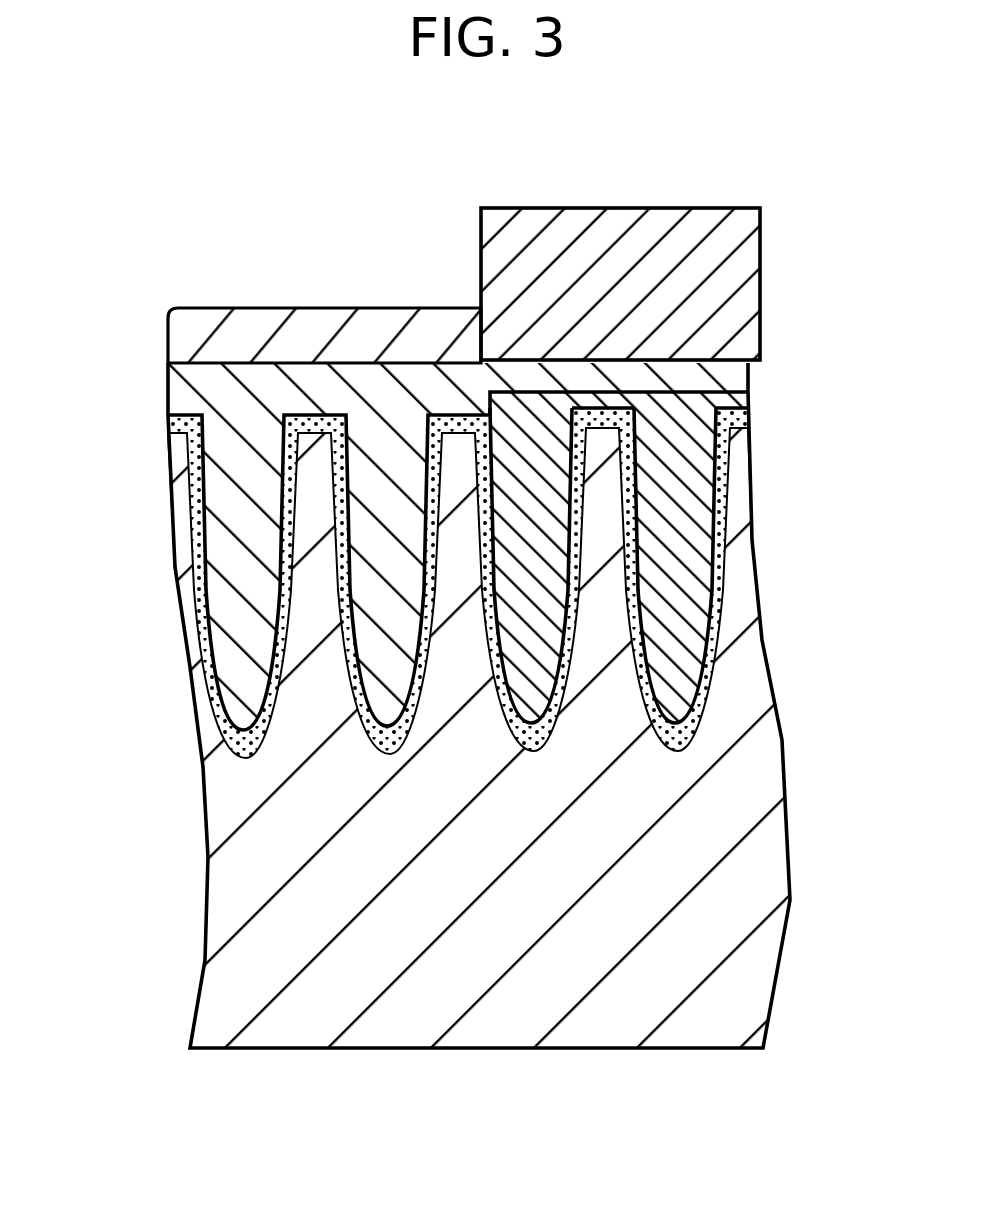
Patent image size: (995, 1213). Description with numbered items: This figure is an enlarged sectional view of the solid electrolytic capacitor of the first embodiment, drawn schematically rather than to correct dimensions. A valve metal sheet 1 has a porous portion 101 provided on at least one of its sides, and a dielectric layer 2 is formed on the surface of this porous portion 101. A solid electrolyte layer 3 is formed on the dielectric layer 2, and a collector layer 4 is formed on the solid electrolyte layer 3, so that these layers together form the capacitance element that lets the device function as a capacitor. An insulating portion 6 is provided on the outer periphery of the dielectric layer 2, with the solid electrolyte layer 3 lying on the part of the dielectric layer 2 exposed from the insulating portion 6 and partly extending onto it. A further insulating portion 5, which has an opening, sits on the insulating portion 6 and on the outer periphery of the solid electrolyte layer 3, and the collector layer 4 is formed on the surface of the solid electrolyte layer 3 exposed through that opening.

The valve metal sheet 1 is at (755, 675).
The dielectric layer 2 is at (723, 560).
The solid electrolyte layer 3 is at (733, 375).
The collector layer 4 is at (300, 323).
The insulating portion 5 is at (658, 218).
The insulating portion 6 is at (720, 463).
The porous portion 101 is at (157, 435).